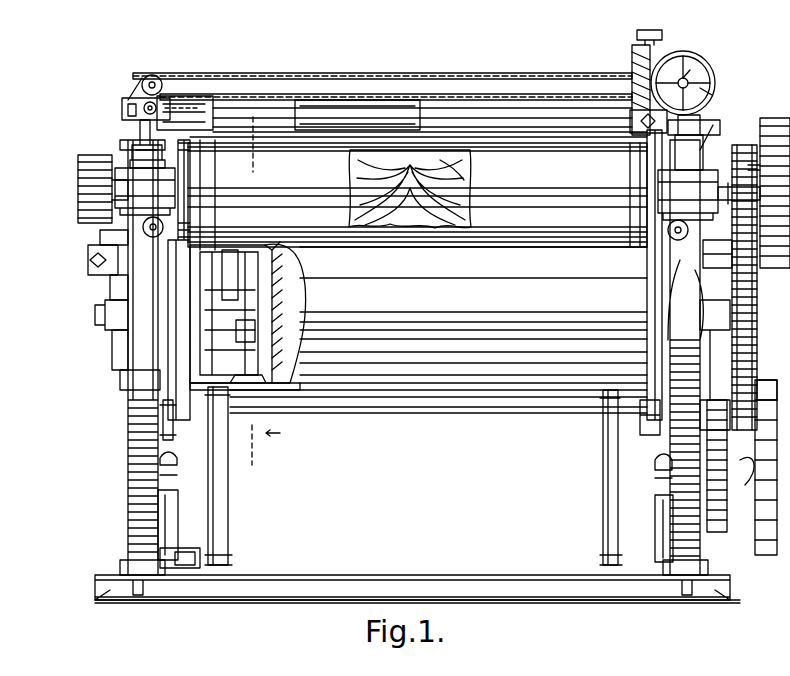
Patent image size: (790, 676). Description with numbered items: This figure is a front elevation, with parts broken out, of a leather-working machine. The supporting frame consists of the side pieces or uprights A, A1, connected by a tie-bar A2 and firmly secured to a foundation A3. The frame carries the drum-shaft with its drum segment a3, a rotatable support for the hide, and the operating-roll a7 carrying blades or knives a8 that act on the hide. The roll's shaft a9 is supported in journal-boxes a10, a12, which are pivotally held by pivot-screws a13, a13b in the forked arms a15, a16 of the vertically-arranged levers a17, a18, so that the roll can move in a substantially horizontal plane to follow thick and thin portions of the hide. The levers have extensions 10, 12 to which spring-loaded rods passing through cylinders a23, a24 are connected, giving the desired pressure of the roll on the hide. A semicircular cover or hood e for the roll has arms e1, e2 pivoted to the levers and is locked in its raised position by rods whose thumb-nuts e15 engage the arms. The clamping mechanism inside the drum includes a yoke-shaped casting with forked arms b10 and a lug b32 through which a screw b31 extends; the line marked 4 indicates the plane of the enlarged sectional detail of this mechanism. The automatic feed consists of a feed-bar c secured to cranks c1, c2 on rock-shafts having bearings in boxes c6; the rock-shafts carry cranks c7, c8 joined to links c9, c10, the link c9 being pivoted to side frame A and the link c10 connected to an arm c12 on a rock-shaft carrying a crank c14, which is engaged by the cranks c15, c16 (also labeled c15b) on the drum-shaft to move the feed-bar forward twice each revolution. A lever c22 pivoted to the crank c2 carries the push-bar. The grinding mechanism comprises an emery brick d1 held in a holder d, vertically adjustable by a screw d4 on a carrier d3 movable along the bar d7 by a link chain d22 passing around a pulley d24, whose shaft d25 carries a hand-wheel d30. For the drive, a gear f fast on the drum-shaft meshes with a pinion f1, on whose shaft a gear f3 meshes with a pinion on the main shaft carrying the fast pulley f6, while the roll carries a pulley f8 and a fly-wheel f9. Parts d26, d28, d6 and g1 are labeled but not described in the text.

The link chain d22 is at (348, 73).
The bar d7 is at (490, 117).
The tie-bar A2 is at (240, 108).
The section line 4 is at (263, 298).
The operating-roll a7 is at (350, 185).
The blades or knives a8 is at (468, 170).
The forked or open arm a15 is at (660, 150).
The cover or hood e is at (521, 230).
The feed-bar c is at (528, 383).
The arm of cover e2 is at (168, 258).
The arm of cover e1 is at (660, 258).
The side piece or upright A1 is at (135, 527).
The side piece or upright A is at (688, 560).
The foundation A3 is at (420, 576).
The crank or arm c2 is at (226, 509).
The crank or arm c1 is at (604, 506).
The lever c22 is at (163, 420).
The link or bar c10 is at (160, 473).
The crank c8 is at (176, 520).
The box c6 is at (180, 550).
The link or bar c9 is at (658, 486).
The crank c7 is at (658, 525).
The guide g1 is at (643, 422).
The forked arms b10 is at (242, 298).
The screw b31 is at (300, 332).
The lug b32 is at (256, 332).
The drum segment a3 is at (282, 433).
The forked or open arm a16 is at (95, 230).
The crank or arm c15 is at (100, 233).
The pulley f8 is at (78, 205).
The vertically-arranged lever a18 is at (112, 290).
The crank or arm c16 is at (108, 308).
The crank or arm c14 is at (118, 352).
The arm c12 is at (140, 382).
The pulley d24 is at (152, 75).
The pulley arm d26 is at (140, 80).
The pulley bracket d28 is at (125, 95).
The extension 12 is at (127, 110).
The journal-box a12 is at (120, 166).
The cylinder a24 is at (140, 155).
The pivot-screw a13 is at (158, 146).
The emery brick d1 is at (686, 76).
The carrier d3 is at (631, 52).
The screw d4 is at (636, 34).
The holder d is at (630, 121).
The shaft d25 is at (692, 82).
The hand-wheel d30 is at (708, 84).
The cylinder a23 is at (708, 122).
The journal-box a10 is at (712, 172).
The extension 10 is at (711, 137).
The pivot-screw a13b is at (680, 143).
The fly-wheel f9 is at (772, 118).
The gear f is at (758, 118).
The shaft a9 is at (745, 195).
The vertically-arranged lever a17 is at (745, 286).
The thumb-nut e15 is at (685, 238).
The adjusting nut d6 is at (706, 244).
The crank or arm c15b is at (720, 378).
The gear f3 is at (720, 471).
The fast pulley f6 is at (757, 479).
The pinion f1 is at (765, 435).